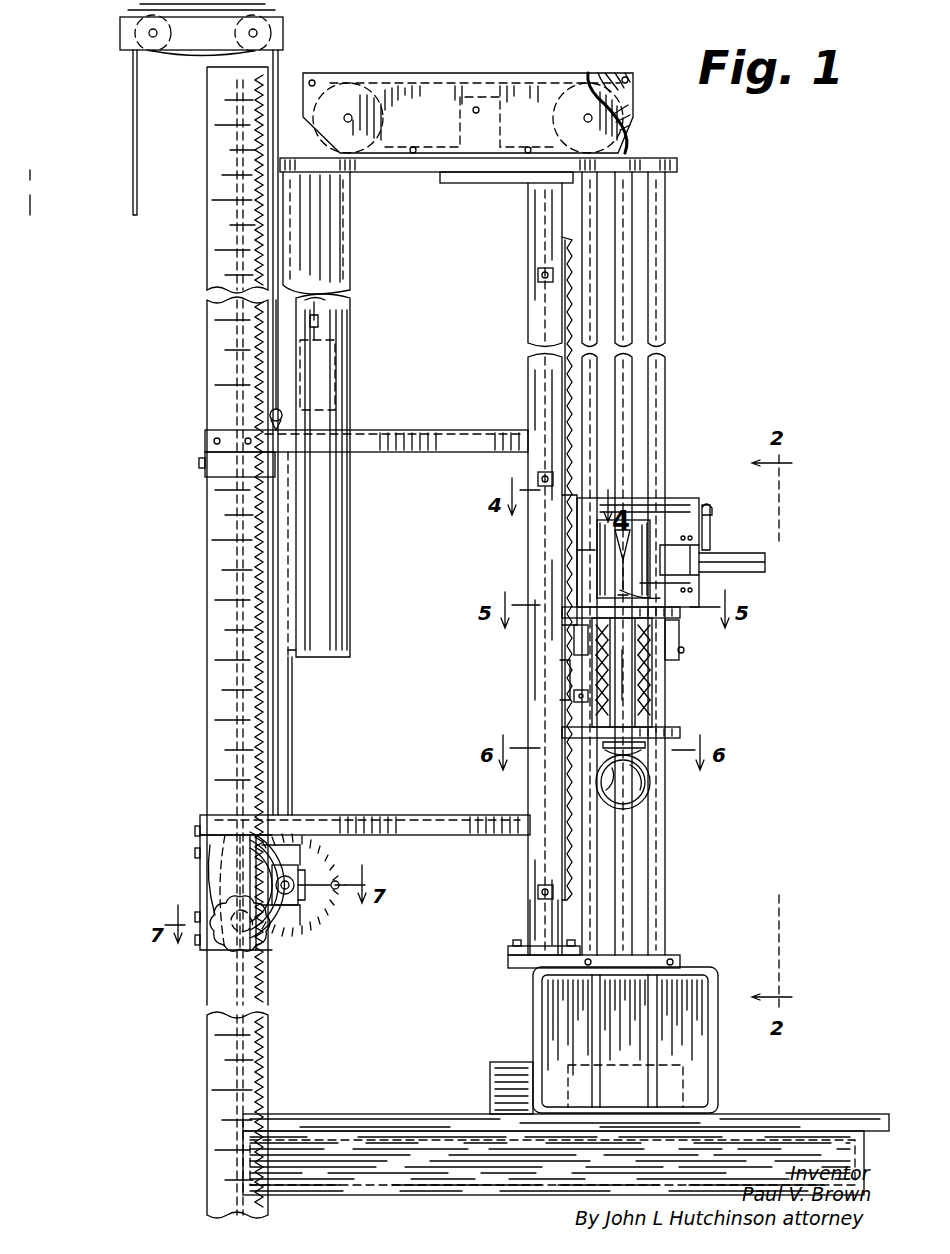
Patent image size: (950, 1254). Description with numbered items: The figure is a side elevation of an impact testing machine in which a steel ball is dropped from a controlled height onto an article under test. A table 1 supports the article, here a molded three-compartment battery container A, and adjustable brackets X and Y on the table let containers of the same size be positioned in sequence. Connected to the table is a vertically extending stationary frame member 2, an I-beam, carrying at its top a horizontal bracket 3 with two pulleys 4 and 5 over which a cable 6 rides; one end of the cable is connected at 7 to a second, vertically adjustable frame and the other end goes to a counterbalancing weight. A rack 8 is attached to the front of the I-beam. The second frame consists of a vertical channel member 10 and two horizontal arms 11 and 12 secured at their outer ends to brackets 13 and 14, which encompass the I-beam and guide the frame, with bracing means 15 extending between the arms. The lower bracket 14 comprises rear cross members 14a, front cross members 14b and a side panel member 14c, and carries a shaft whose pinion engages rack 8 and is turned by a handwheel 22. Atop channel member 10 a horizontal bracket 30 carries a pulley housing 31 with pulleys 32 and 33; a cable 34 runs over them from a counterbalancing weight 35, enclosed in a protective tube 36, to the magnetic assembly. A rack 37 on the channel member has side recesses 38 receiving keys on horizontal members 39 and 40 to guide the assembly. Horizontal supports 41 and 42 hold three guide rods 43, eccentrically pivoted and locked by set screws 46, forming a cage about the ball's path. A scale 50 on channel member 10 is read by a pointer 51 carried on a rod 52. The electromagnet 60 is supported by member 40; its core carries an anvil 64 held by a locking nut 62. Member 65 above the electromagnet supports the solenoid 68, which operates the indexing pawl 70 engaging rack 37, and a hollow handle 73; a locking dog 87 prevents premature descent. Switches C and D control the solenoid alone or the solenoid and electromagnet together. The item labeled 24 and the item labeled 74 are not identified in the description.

The table 1 is at (820, 1114).
The stationary frame member 2 is at (207, 680).
The horizontal bracket 3 is at (205, 37).
The pulley 4 is at (152, 50).
The pulley 5 is at (260, 8).
The cable 6 is at (278, 78).
The cable connection 7 is at (270, 412).
The rack 8 is at (245, 595).
The channel member 10 is at (220, 861).
The horizontal arm 11 is at (445, 432).
The horizontal arm 12 is at (405, 820).
The upper bracket 13 is at (220, 470).
The lower bracket 14 is at (185, 858).
The rear cross members 14a is at (197, 830).
The front cross members 14b is at (300, 835).
The side panel member 14c is at (210, 880).
The bracing means 15 is at (292, 735).
The handwheel 22 is at (340, 870).
The knob 24 is at (240, 945).
The horizontal bracket 30 is at (465, 183).
The pulley housing 31 is at (490, 73).
The pulley 32 is at (592, 70).
The pulley 33 is at (355, 95).
The cable 34 is at (628, 145).
The counterbalancing weight 35 is at (325, 370).
The protective tube 36 is at (350, 500).
The rack 37 is at (560, 325).
The vertical recess 38 is at (562, 240).
The horizontally disposed member 39 is at (545, 466).
The horizontally disposed member 40 is at (680, 730).
The lower support 41 is at (680, 958).
The upper support 42 is at (677, 165).
The guide rods 43 is at (595, 920).
The set screw 46 is at (674, 962).
The scale 50 is at (560, 870).
The pointer 51 is at (575, 695).
The vertically extending rod 52 is at (620, 683).
The electromagnet 60 is at (560, 715).
The soft iron locking nut 62 is at (645, 745).
The anvil 64 is at (650, 775).
The non-magnetic member 65 is at (680, 620).
The solenoid 68 is at (650, 520).
The indexing pawl 70 is at (570, 515).
The hollow handle 73 is at (765, 565).
The cable 74 is at (650, 790).
The locking dog 87 is at (574, 643).
The battery container A is at (718, 1065).
The switch C is at (710, 540).
The switch D is at (685, 650).
The bracket X is at (510, 1062).
The bracket Y is at (625, 1060).